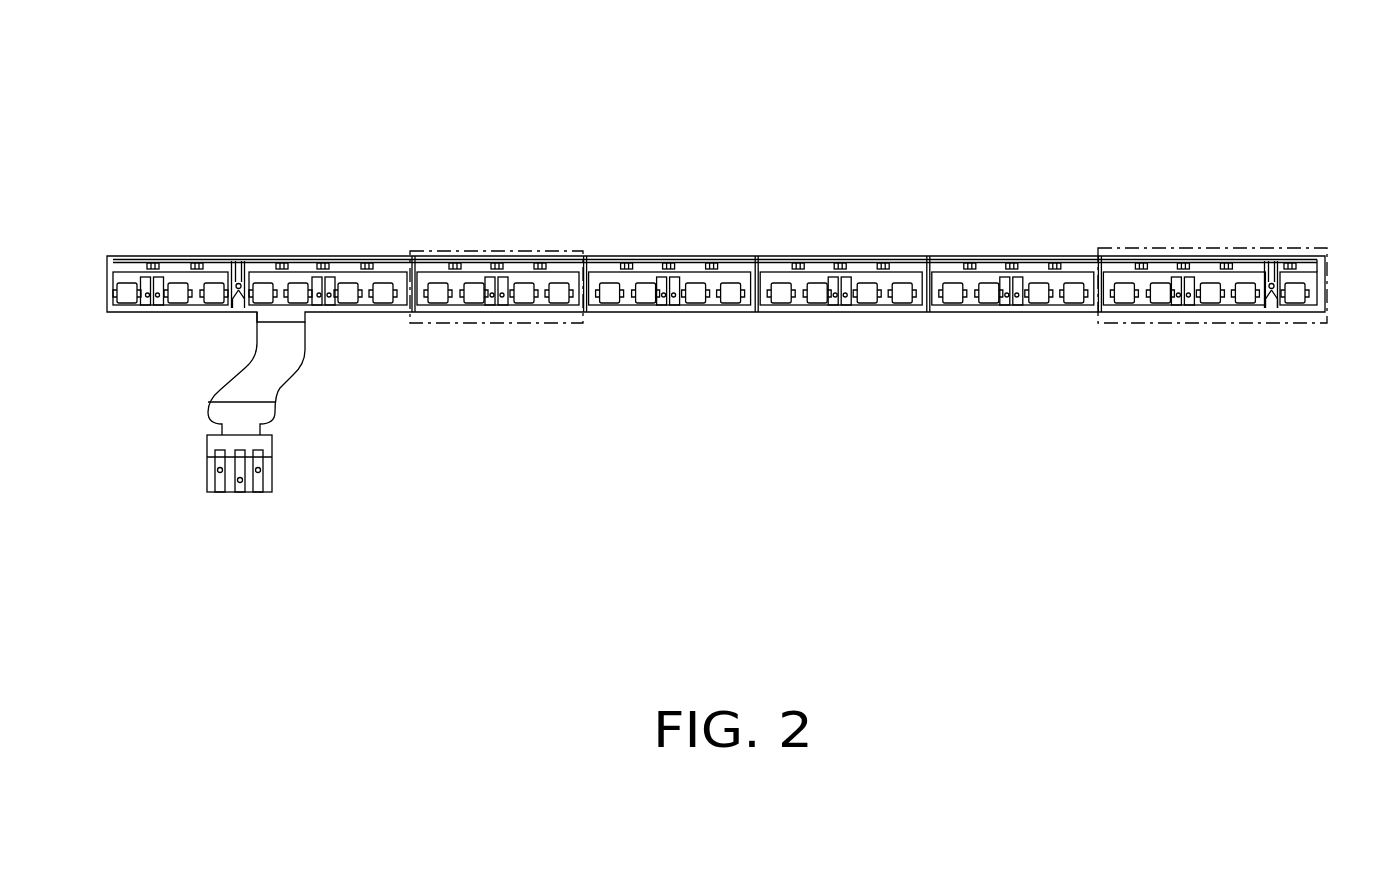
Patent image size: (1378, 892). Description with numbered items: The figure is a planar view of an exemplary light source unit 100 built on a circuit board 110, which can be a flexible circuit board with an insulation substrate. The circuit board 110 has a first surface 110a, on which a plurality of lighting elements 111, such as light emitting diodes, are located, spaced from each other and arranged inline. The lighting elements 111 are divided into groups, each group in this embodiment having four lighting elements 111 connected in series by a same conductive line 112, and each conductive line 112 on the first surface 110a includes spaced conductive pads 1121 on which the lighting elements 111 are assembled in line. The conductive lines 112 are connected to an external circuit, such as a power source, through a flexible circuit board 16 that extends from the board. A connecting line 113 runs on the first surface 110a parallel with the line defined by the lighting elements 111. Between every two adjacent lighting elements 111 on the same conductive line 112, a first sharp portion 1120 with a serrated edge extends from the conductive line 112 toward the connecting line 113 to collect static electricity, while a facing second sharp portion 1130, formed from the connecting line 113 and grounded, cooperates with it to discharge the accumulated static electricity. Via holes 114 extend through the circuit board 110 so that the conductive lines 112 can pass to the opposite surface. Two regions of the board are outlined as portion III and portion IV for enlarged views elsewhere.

The light source unit 100 is at (489, 93).
The flexible circuit board 16 is at (222, 442).
The circuit board 110 is at (1307, 303).
The first surface 110a is at (1055, 303).
The lighting element 111 is at (1303, 288).
The conductive line 112 is at (1263, 302).
The conductive pad 1121 is at (1262, 280).
The connecting line 113 is at (1126, 264).
The first sharp portion 1120 is at (989, 261).
The second sharp portion 1130 is at (1066, 264).
The via hole 114 is at (1282, 293).
The outlined portion IV is at (497, 250).
The outlined portion III is at (1188, 247).